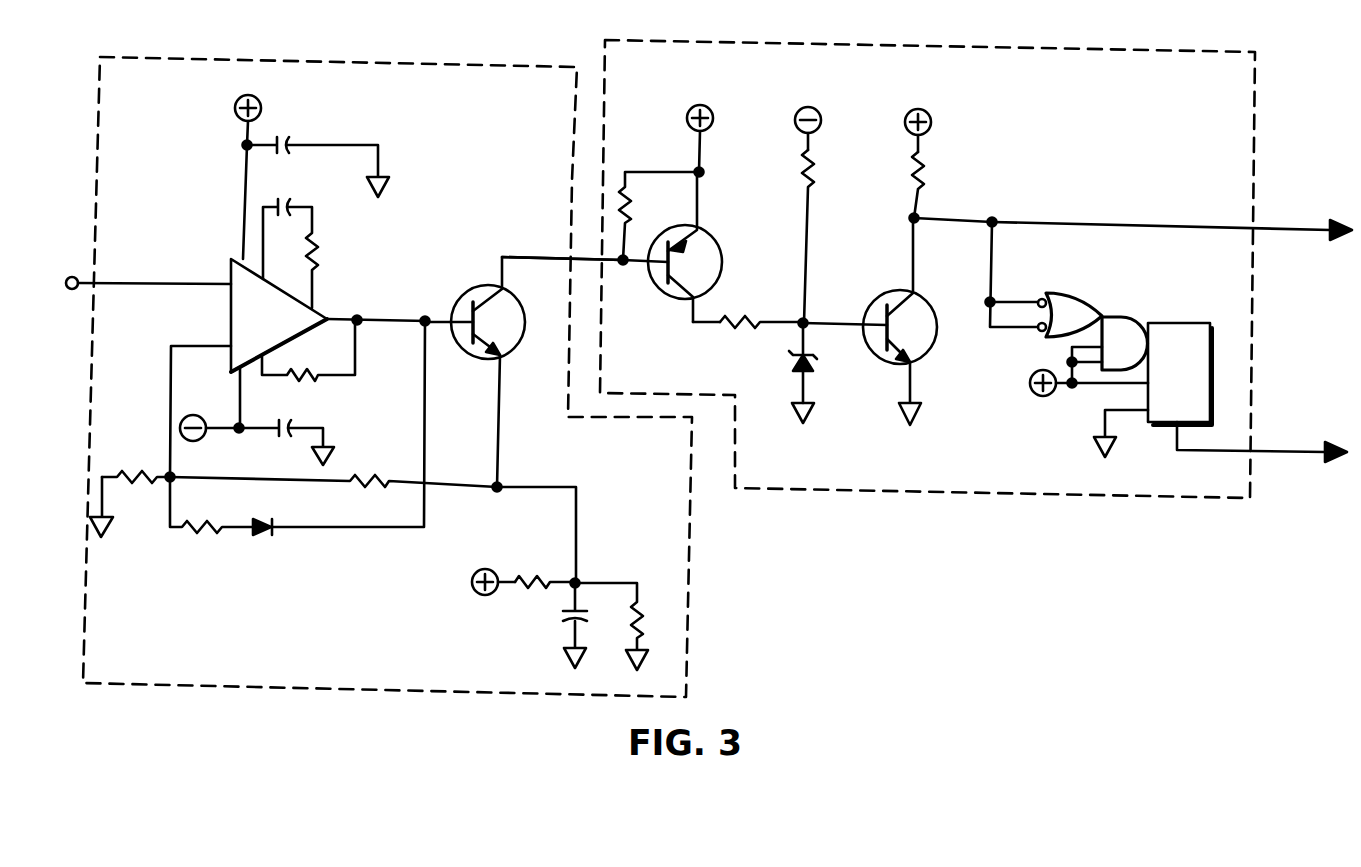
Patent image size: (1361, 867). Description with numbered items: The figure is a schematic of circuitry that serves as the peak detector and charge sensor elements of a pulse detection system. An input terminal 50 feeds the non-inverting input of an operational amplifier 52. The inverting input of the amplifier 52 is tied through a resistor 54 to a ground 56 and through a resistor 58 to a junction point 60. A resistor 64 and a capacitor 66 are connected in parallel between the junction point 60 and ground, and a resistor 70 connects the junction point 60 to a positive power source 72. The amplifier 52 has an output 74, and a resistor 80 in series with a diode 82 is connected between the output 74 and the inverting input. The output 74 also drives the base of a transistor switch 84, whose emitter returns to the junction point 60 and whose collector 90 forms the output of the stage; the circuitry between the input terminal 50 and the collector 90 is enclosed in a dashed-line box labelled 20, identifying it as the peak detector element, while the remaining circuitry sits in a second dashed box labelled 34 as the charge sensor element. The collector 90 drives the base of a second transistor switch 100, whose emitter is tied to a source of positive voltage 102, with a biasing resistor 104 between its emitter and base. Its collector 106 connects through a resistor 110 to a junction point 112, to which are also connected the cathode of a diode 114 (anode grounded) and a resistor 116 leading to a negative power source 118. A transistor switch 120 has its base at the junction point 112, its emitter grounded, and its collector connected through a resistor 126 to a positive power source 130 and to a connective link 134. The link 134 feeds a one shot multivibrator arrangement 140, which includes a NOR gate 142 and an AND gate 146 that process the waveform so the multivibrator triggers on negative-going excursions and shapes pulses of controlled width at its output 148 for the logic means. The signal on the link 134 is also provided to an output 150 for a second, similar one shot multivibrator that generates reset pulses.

The peak detector element 20 is at (153, 670).
The charge sensor element 34 is at (771, 480).
The input terminal 50 is at (86, 278).
The operational amplifier 52 is at (288, 332).
The resistor 54 is at (133, 472).
The ground 56 is at (105, 523).
The resistor 58 is at (378, 480).
The junction point 60 is at (502, 484).
The resistor 64 is at (647, 618).
The capacitor 66 is at (567, 611).
The resistor 70 is at (531, 573).
The positive power source 72 is at (488, 568).
The output 74 is at (332, 317).
The resistor 80 is at (206, 533).
The diode 82 is at (265, 517).
The transistor switch 84 is at (515, 337).
The collector 90 is at (522, 256).
The second transistor switch 100 is at (715, 273).
The source of positive voltage 102 is at (701, 105).
The biasing resistor 104 is at (621, 188).
The collector 106 is at (702, 326).
The resistor 110 is at (737, 314).
The junction point 112 is at (806, 327).
The diode 114 is at (807, 371).
The resistor 116 is at (802, 172).
The negative power source 118 is at (808, 107).
The transistor switch 120 is at (928, 340).
The resistor 126 is at (908, 173).
The positive power source 130 is at (918, 109).
The connective link 134 is at (940, 218).
The one shot multivibrator arrangement 140 is at (1192, 310).
The NOR gate 142 is at (1060, 292).
The AND gate 146 is at (1115, 319).
The output 148 is at (1277, 450).
The output 150 is at (1277, 228).